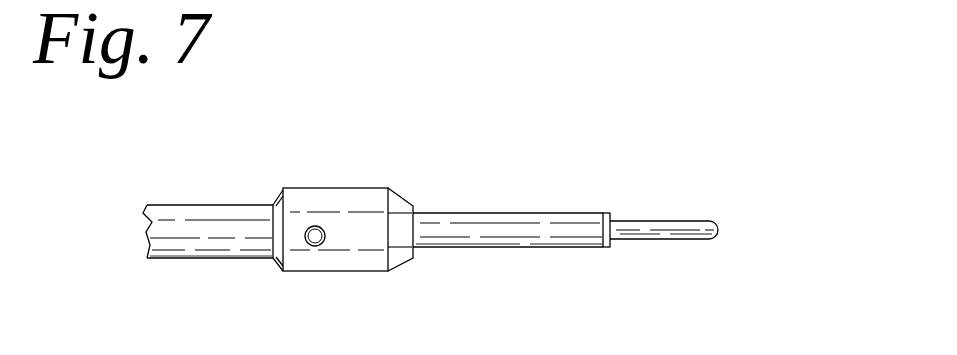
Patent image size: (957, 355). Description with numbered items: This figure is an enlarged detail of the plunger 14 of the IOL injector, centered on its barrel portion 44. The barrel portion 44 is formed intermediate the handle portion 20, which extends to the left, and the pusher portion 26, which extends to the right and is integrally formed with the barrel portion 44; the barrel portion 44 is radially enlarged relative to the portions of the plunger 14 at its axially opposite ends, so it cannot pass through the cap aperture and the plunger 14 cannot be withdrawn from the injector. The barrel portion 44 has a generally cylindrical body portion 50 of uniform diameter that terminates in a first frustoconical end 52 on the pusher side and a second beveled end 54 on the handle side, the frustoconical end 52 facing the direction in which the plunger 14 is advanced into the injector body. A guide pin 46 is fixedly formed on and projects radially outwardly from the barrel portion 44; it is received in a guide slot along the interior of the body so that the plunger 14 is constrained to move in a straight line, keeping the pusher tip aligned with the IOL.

The plunger 14 is at (213, 172).
The handle portion 20 is at (150, 258).
The second beveled end 54 is at (278, 188).
The barrel portion 44 is at (332, 189).
The cylindrical body portion 50 is at (358, 215).
The guide pin 46 is at (312, 246).
The first frustoconical end 52 is at (412, 207).
The pusher portion 26 is at (510, 216).